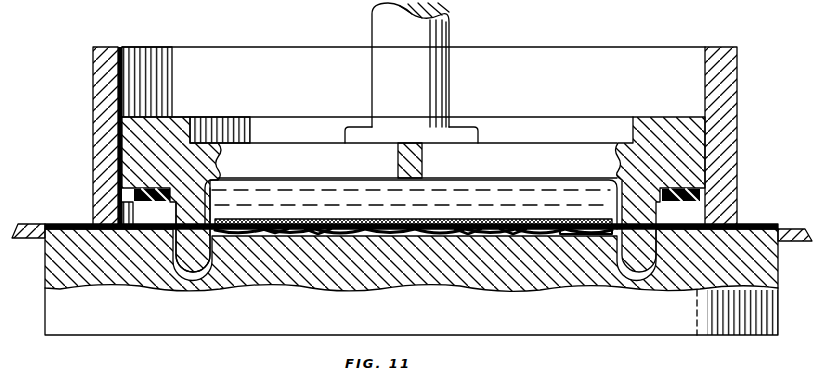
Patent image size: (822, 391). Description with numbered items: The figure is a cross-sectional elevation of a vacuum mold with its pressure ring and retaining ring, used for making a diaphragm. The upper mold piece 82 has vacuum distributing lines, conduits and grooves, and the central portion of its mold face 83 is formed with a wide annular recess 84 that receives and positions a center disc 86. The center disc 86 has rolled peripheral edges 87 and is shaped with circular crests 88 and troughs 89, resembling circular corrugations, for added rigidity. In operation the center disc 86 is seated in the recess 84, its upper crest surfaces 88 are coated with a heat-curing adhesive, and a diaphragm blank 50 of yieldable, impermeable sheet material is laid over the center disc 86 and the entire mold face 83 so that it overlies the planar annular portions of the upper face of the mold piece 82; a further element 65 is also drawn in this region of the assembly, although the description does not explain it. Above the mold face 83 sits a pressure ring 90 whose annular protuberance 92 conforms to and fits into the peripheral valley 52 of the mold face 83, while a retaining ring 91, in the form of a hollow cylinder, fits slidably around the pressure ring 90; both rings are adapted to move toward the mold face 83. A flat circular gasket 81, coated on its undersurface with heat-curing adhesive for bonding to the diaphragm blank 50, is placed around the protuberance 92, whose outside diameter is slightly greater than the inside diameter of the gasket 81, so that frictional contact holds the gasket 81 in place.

The diaphragm blank 50 is at (72, 226).
The peripheral valley 52 is at (193, 279).
The porous layer 65 is at (392, 218).
The gasket 81 is at (146, 202).
The upper mold piece 82 is at (421, 308).
The mold face 83 is at (396, 229).
The annular recess 84 is at (514, 234).
The center disc 86 is at (278, 232).
The rolled peripheral edges 87 is at (562, 220).
The circular crests 88 is at (322, 232).
The circular troughs 89 is at (470, 234).
The pressure ring 90 is at (163, 125).
The retaining ring 91 is at (93, 106).
The annular protuberance 92 is at (178, 243).